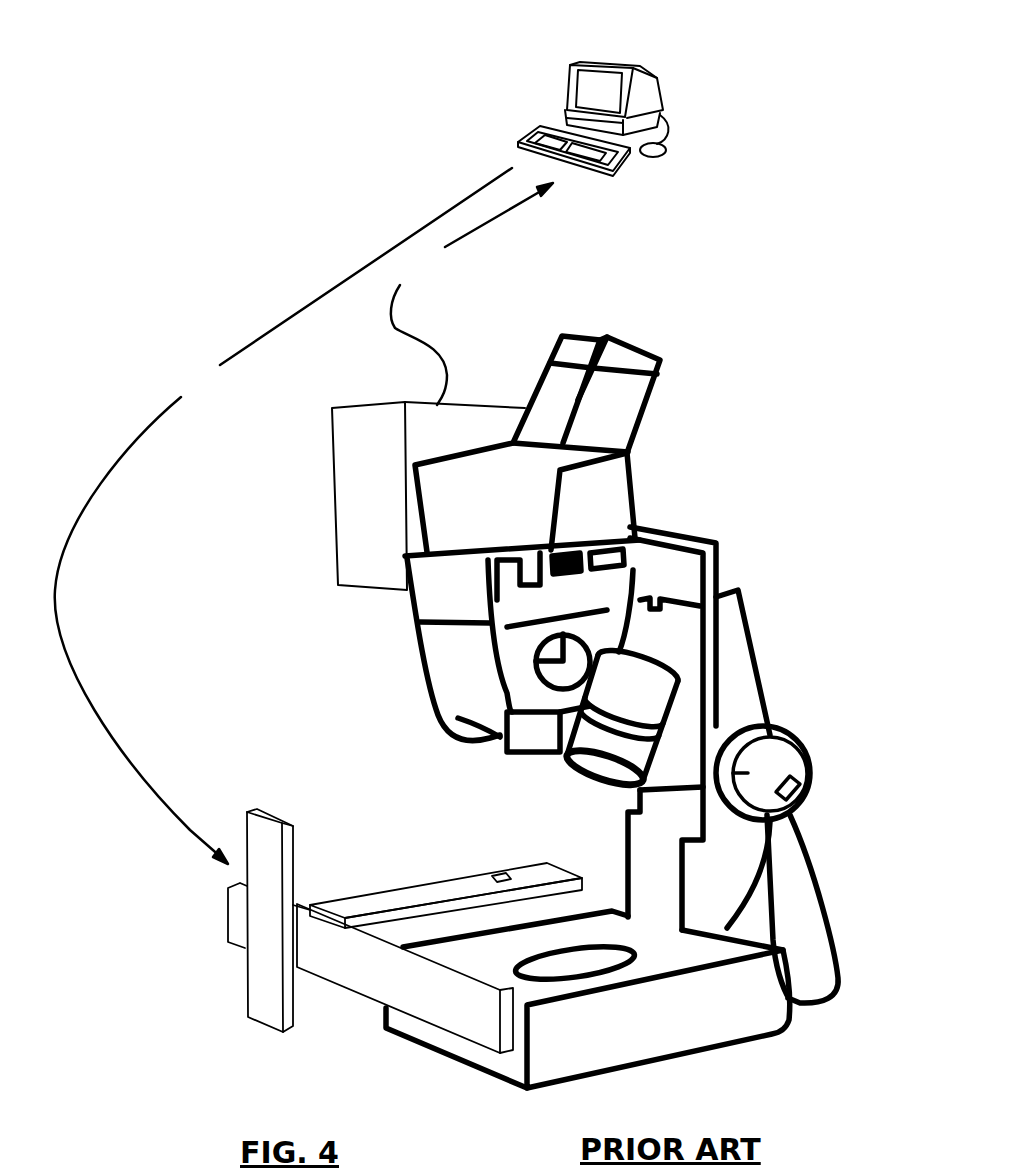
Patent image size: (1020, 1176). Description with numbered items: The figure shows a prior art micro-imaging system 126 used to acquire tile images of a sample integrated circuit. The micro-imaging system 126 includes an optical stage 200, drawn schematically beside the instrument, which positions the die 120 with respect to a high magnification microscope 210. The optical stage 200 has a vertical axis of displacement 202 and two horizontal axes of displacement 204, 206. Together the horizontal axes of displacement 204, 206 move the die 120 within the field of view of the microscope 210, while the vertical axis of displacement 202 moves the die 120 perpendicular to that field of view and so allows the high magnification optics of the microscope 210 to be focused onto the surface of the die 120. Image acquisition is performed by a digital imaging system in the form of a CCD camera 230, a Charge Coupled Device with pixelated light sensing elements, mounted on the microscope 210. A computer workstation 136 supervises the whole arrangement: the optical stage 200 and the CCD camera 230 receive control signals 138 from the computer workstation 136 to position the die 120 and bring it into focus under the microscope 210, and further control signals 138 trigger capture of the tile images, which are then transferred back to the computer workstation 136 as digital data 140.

The computer workstation 136 is at (601, 82).
The control signals 138 is at (253, 342).
The digital data 140 is at (393, 328).
The CCD camera 230 is at (355, 562).
The micro-imaging system 126 is at (788, 520).
The high magnification microscope 210 is at (458, 703).
The optical stage 200 is at (336, 944).
The vertical axis of displacement 202 is at (267, 1002).
The horizontal axis of displacement 204 is at (353, 978).
The horizontal axis of displacement 206 is at (446, 871).
The die 120 is at (500, 872).